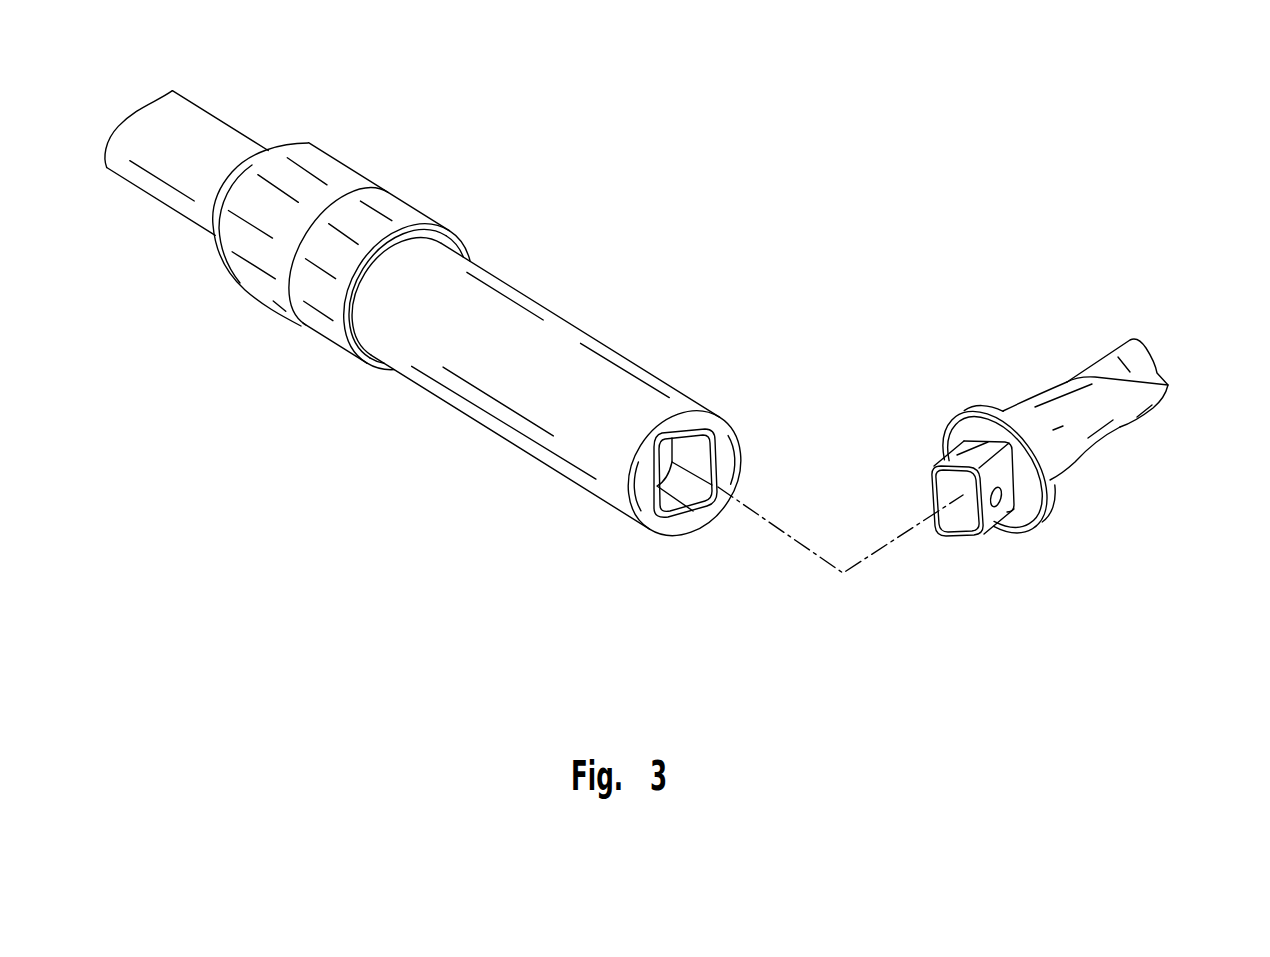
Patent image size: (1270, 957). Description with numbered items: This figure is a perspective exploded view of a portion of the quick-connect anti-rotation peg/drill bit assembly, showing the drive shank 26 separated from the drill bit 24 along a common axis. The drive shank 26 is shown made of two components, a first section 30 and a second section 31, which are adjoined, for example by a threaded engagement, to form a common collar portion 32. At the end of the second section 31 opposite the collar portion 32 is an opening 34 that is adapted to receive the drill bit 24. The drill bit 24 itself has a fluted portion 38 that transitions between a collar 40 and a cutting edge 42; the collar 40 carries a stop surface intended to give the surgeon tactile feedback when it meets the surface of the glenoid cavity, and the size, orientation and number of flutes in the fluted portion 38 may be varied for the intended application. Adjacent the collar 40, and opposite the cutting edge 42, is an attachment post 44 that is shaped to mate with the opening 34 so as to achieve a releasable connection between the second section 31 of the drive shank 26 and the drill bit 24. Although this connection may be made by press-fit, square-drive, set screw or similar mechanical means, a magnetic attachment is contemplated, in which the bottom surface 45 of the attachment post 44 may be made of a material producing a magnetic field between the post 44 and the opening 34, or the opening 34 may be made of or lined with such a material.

The drill bit 24 is at (1057, 455).
The drive shank 26 is at (475, 286).
The first section 30 is at (213, 137).
The second section 31 is at (530, 413).
The collar portion 32 is at (350, 181).
The opening 34 is at (697, 462).
The fluted portion 38 is at (1089, 373).
The collar 40 is at (1047, 490).
The cutting edge 42 is at (1157, 369).
The attachment post 44 is at (996, 517).
The bottom surface 45 is at (955, 520).